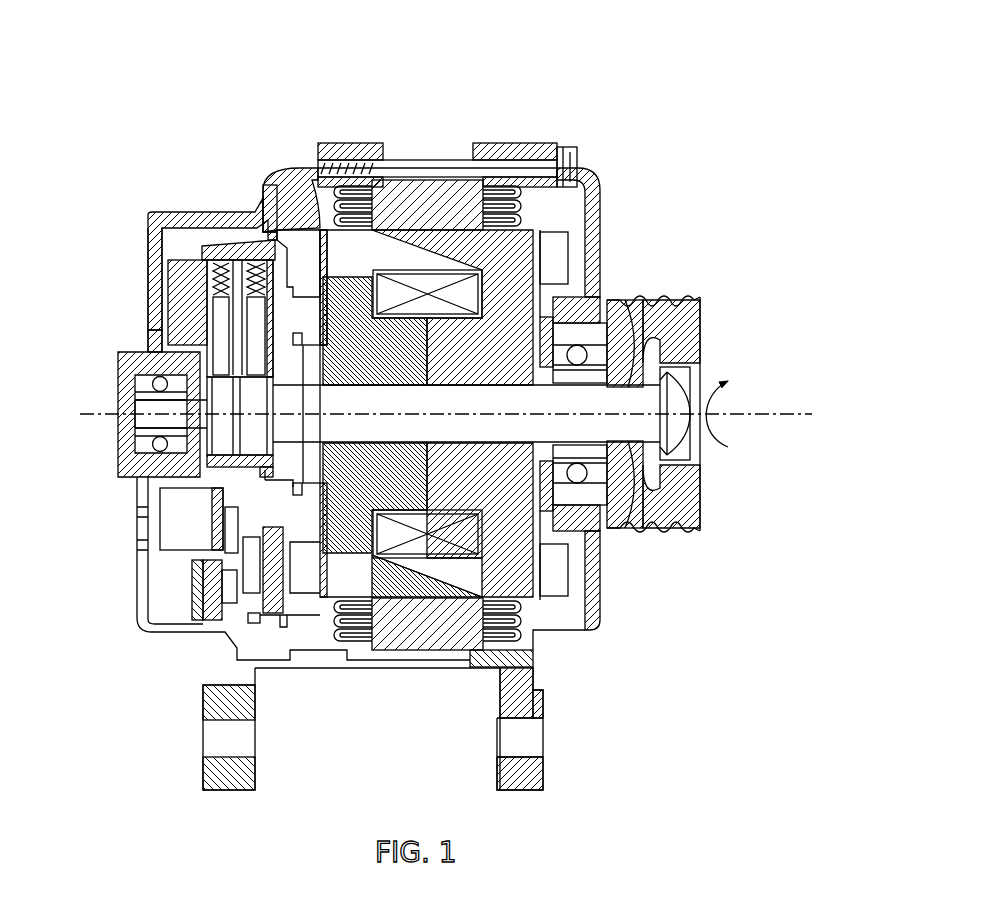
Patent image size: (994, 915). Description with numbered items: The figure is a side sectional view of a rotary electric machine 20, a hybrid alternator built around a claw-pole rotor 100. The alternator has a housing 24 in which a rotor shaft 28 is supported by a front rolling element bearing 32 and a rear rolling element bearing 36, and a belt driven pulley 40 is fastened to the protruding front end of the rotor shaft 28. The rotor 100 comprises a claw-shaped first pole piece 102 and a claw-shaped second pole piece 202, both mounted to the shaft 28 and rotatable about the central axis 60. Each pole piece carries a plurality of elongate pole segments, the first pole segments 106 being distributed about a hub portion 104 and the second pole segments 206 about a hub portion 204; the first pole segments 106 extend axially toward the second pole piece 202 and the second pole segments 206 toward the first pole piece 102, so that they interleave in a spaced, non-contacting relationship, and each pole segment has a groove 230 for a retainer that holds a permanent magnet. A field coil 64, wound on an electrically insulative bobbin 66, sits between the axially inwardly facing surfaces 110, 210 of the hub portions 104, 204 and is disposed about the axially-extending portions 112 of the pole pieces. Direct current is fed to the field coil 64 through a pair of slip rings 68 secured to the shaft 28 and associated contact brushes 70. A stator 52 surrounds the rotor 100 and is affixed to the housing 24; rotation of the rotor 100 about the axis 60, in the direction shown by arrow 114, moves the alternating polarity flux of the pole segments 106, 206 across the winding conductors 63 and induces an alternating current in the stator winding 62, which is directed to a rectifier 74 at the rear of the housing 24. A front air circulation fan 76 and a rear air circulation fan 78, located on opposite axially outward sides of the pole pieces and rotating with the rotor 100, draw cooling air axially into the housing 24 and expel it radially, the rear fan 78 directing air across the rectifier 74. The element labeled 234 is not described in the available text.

The rotary electric machine 20 is at (708, 96).
The housing 24 is at (590, 222).
The rotor shaft 28 is at (652, 392).
The front rolling element bearing 32 is at (587, 333).
The rear rolling element bearing 36 is at (140, 447).
The belt driven pulley 40 is at (697, 298).
The stator 52 is at (438, 163).
The axis 60 is at (797, 416).
The stator winding 62 is at (470, 371).
The winding conductors 63 is at (507, 187).
The field coil 64 is at (477, 544).
The bobbin 66 is at (372, 553).
The slip rings 68 is at (205, 402).
The contact brushes 70 is at (223, 338).
The rectifier 74 is at (183, 536).
The front air circulation fan 76 is at (560, 257).
The rear air circulation fan 78 is at (240, 221).
The rotor 100 is at (533, 609).
The first pole piece 102 is at (517, 232).
The hub portion 104 is at (585, 540).
The first pole segments 106 is at (447, 232).
The axially inwardly facing surface 110 is at (458, 600).
The axially-extending portion 112 is at (489, 368).
The arrow 114 is at (728, 447).
The second pole piece 202 is at (298, 240).
The hub portion 204 is at (337, 530).
The second pole segments 206 is at (423, 547).
The axially inwardly facing surface 210 is at (380, 292).
The groove 230 is at (337, 583).
The end cap 234 is at (332, 248).